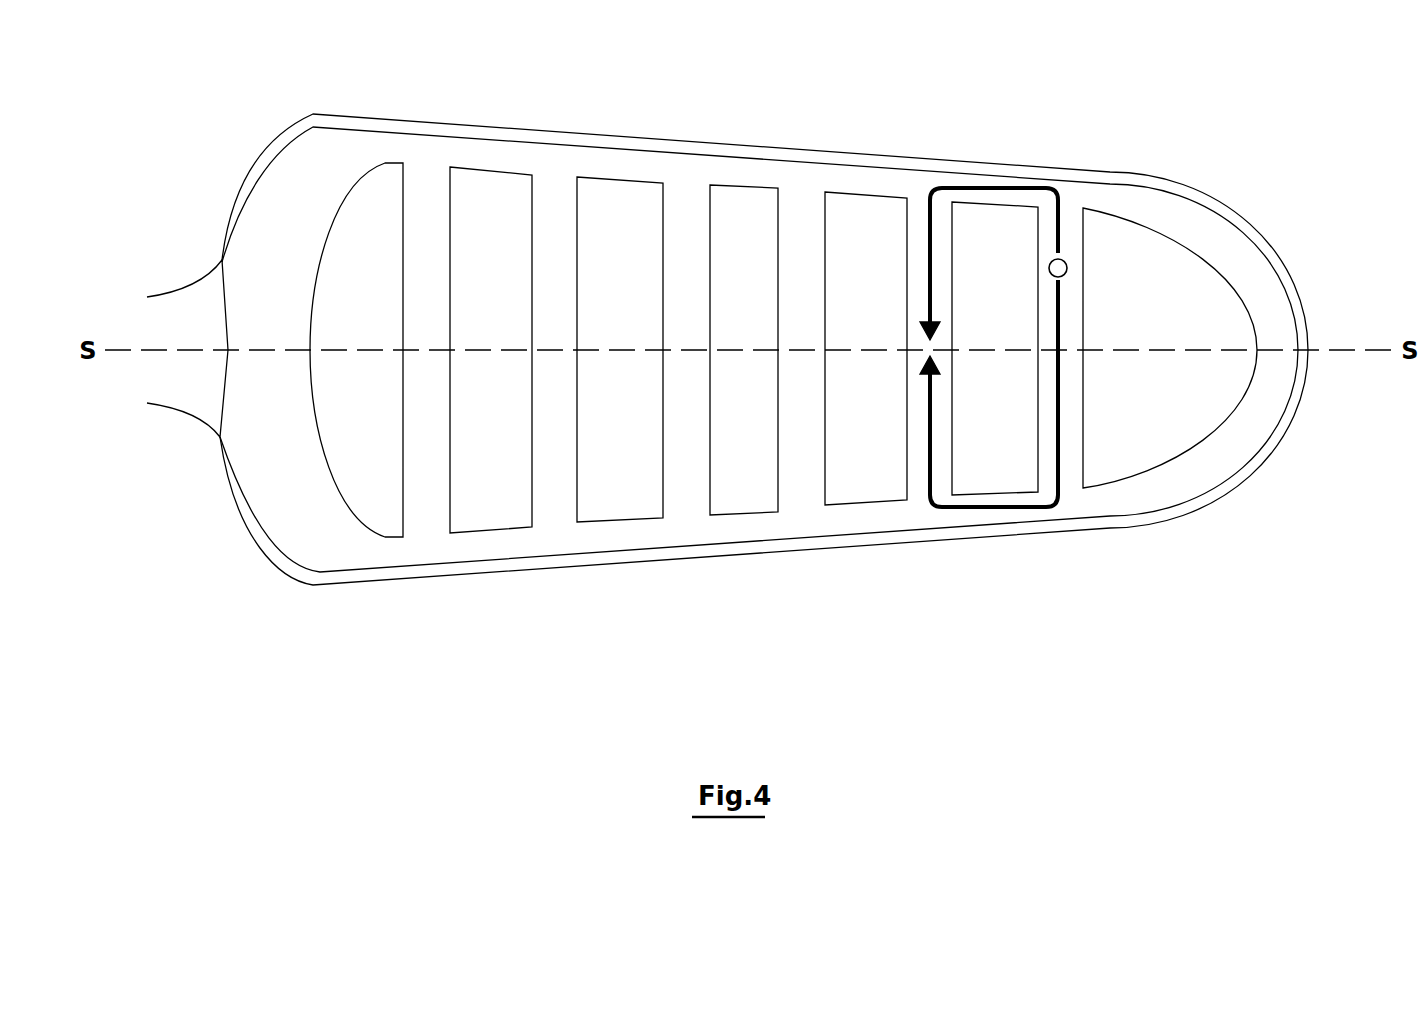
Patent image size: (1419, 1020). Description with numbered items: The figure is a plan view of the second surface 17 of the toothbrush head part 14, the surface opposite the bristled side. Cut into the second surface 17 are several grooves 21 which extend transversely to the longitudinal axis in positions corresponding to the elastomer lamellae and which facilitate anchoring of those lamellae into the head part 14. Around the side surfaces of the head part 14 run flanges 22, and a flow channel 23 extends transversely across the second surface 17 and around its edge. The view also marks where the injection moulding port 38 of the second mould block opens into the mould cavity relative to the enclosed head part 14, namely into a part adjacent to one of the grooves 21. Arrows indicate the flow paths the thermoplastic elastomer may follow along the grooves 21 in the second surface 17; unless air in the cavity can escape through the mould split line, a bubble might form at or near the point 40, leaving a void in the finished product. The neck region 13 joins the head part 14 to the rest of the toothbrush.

The connecting neck 13 is at (147, 297).
The head part 14 is at (832, 550).
The second surface 17 is at (1168, 412).
The grooves 21 is at (553, 507).
The flanges 22 is at (1273, 442).
The flow channel 23 is at (303, 513).
The injection moulding port 38 is at (1063, 252).
The point 40 is at (921, 340).